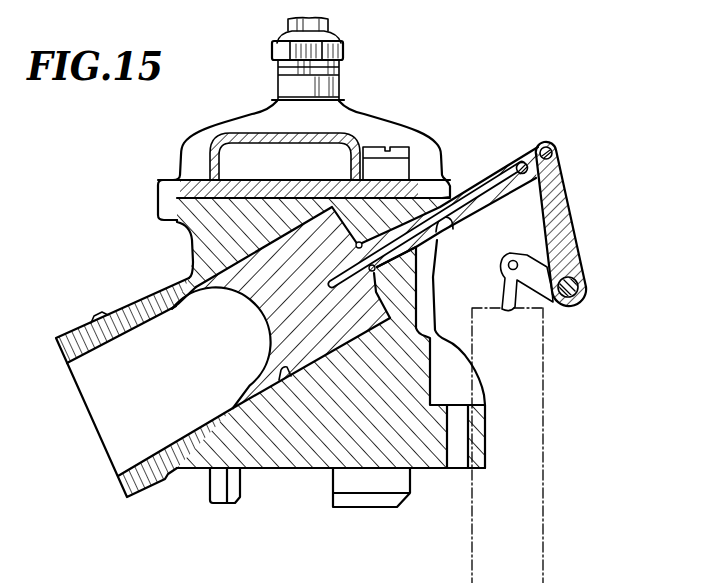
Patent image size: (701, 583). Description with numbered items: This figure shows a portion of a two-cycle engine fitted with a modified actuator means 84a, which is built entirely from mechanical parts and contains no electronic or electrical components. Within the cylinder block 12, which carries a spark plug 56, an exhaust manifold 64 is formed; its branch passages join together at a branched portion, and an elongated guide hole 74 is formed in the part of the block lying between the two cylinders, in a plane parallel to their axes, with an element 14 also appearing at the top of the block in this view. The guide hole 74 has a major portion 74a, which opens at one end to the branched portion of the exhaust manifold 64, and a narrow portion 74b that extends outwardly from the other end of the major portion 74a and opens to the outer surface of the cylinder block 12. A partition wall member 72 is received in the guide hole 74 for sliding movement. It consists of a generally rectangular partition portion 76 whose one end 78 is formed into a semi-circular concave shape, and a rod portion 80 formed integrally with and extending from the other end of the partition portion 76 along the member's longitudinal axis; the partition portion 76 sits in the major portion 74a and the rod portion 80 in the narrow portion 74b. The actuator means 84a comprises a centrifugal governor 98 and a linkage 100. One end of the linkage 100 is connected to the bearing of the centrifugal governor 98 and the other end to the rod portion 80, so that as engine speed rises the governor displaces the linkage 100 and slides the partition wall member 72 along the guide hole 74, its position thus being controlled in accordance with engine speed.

The cylinder block 12 is at (322, 470).
The cover 14 is at (377, 120).
The spark plug 56 is at (343, 44).
The exhaust manifold 64 is at (102, 427).
The partition wall member 72 is at (383, 288).
The guide hole 74 is at (200, 287).
The major portion 74a is at (283, 372).
The narrow portion 74b is at (453, 218).
The partition portion 76 is at (245, 268).
The one end 78 is at (250, 307).
The rod portion 80 is at (490, 180).
The actuator means 84a is at (557, 335).
The centrifugal governor 98 is at (540, 485).
The linkage 100 is at (583, 194).